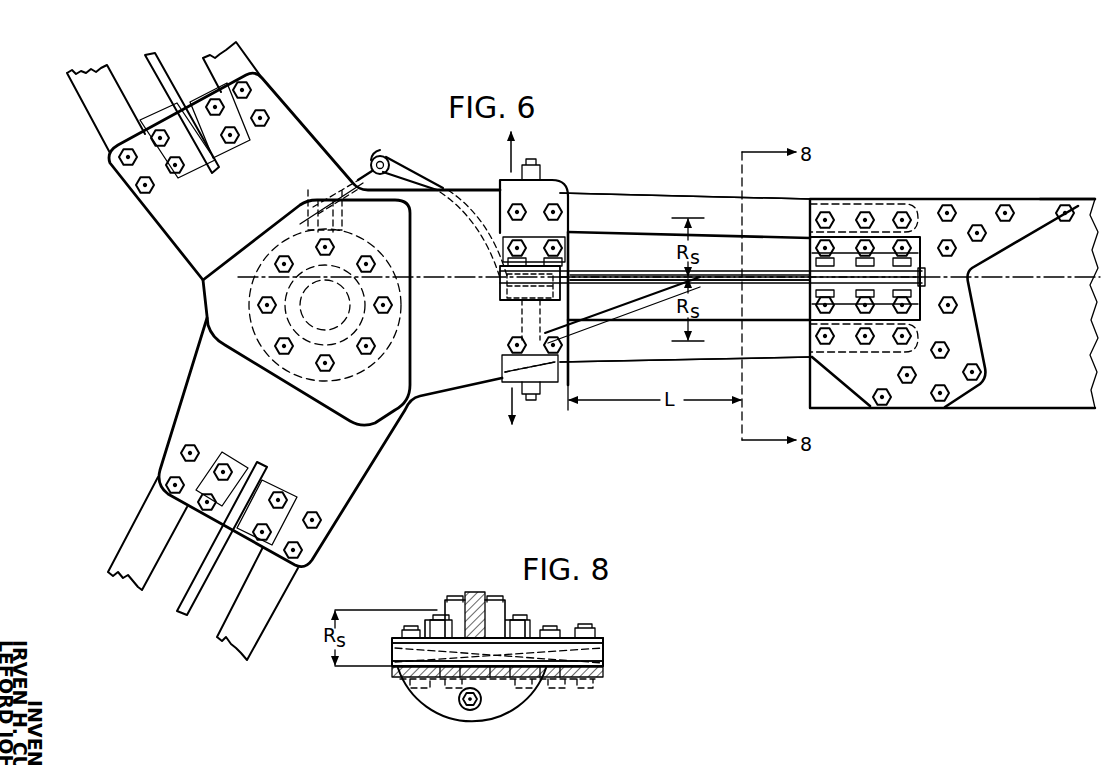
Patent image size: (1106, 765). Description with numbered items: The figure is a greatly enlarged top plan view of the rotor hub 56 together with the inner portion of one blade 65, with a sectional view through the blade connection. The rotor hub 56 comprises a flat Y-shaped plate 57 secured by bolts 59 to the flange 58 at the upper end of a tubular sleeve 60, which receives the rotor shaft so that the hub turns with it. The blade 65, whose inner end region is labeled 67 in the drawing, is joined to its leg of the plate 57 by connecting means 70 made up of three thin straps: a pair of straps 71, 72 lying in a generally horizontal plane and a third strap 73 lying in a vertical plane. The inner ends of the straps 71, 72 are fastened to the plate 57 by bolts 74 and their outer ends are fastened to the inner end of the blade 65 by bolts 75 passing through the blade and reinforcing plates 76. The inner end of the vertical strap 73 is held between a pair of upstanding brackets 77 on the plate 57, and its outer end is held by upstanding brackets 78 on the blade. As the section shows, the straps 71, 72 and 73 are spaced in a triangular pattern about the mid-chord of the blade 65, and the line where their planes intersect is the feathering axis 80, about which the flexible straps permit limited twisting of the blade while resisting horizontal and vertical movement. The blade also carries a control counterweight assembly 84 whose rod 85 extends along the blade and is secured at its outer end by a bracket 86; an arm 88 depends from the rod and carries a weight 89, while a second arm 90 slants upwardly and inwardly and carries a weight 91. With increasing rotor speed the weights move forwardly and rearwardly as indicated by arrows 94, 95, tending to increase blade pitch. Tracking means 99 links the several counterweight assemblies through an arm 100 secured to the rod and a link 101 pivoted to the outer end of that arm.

In FIG. 6, the rotor hub 56 is at (406, 422).
In FIG. 6, the Y-shaped plate 57 is at (458, 186).
In FIG. 6, the flange 58 is at (270, 344).
In FIG. 6, the bolts 59 is at (346, 348).
In FIG. 6, the tubular sleeve 60 is at (338, 256).
In FIG. 6, the blade 65 is at (1016, 412).
In FIG. 8, the blade 65 is at (542, 640).
In FIG. 6, the plate upper edge 67 is at (1086, 199).
In FIG. 8, the plate upper edge 67 is at (392, 660).
In FIG. 6, the connecting means 70 is at (620, 190).
In FIG. 6, the strap 71 is at (655, 200).
In FIG. 8, the strap 71 is at (395, 668).
In FIG. 6, the strap 72 is at (733, 358).
In FIG. 8, the strap 72 is at (550, 677).
In FIG. 6, the third strap 73 is at (628, 273).
In FIG. 8, the third strap 73 is at (478, 592).
In FIG. 6, the bolts 74 is at (546, 206).
In FIG. 6, the bolts 75 is at (870, 213).
In FIG. 6, the reinforcing plates 76 is at (972, 318).
In FIG. 8, the reinforcing plates 76 is at (603, 640).
In FIG. 6, the upstanding brackets 77 is at (503, 270).
In FIG. 6, the upstanding brackets 78 is at (820, 269).
In FIG. 8, the upstanding brackets 78 is at (455, 600).
In FIG. 6, the feathering axis 80 is at (740, 280).
In FIG. 8, the feathering axis 80 is at (468, 674).
In FIG. 6, the control counterweight assembly 84 is at (576, 186).
In FIG. 6, the rod 85 is at (748, 272).
In FIG. 8, the rod 85 is at (472, 712).
In FIG. 8, the bracket 86 is at (508, 700).
In FIG. 6, the arm 88 is at (490, 256).
In FIG. 6, the weight 89 is at (545, 178).
In FIG. 6, the second arm 90 is at (630, 306).
In FIG. 6, the weight 91 is at (548, 384).
In FIG. 6, the arrow 94 is at (507, 152).
In FIG. 6, the arrow 95 is at (505, 404).
In FIG. 6, the tracking means 99 is at (360, 160).
In FIG. 6, the arm 100 is at (390, 158).
In FIG. 6, the link 101 is at (372, 160).